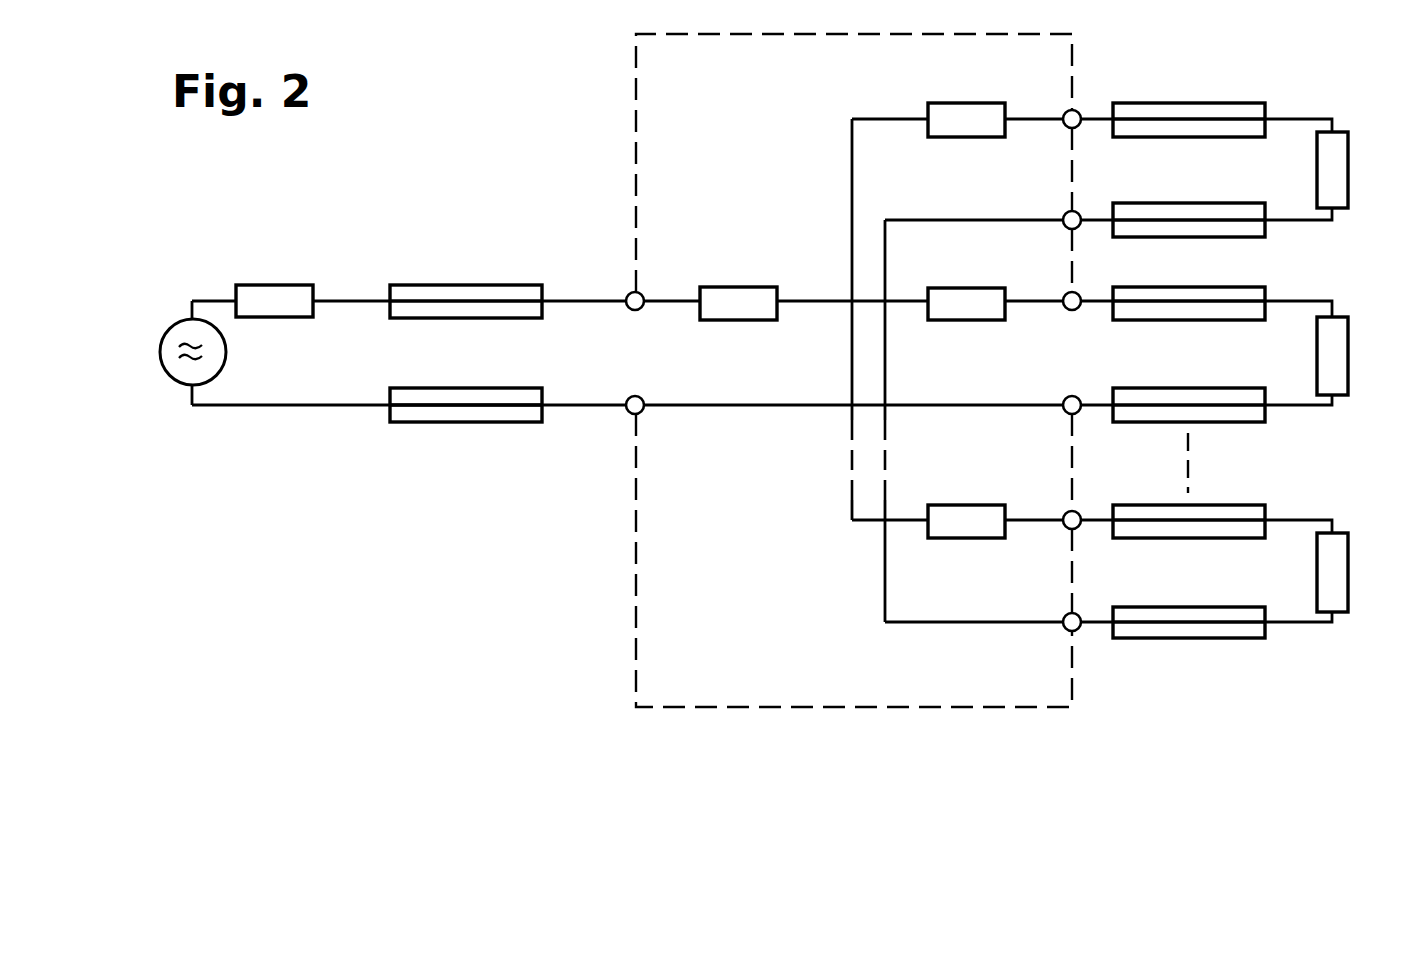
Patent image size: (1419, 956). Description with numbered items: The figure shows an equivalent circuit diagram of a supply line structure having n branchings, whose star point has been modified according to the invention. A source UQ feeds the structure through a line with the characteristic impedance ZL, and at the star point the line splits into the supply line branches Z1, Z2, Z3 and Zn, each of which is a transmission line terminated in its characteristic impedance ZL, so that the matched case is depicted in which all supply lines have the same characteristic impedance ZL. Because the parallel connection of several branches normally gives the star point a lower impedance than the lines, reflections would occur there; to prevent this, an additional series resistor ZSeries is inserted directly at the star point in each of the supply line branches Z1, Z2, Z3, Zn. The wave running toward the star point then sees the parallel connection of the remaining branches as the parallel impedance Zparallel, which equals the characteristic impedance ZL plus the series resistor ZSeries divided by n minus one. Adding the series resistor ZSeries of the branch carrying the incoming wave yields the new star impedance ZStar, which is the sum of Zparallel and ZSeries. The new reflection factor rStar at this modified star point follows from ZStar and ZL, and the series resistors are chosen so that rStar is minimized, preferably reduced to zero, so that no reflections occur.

The voltage source UQ is at (171, 352).
The characteristic impedance ZL is at (814, 370).
The series resistor ZSeries is at (859, 298).
The supply line branch Z1 is at (573, 753).
The supply line branch Z2 is at (1073, 169).
The supply line branch Z3 is at (1073, 353).
The supply line branch Zn is at (1073, 571).
The new star impedance ZStar is at (806, 414).
The new reflection factor rStar is at (584, 817).
The parallel impedance Zparallel is at (830, 355).